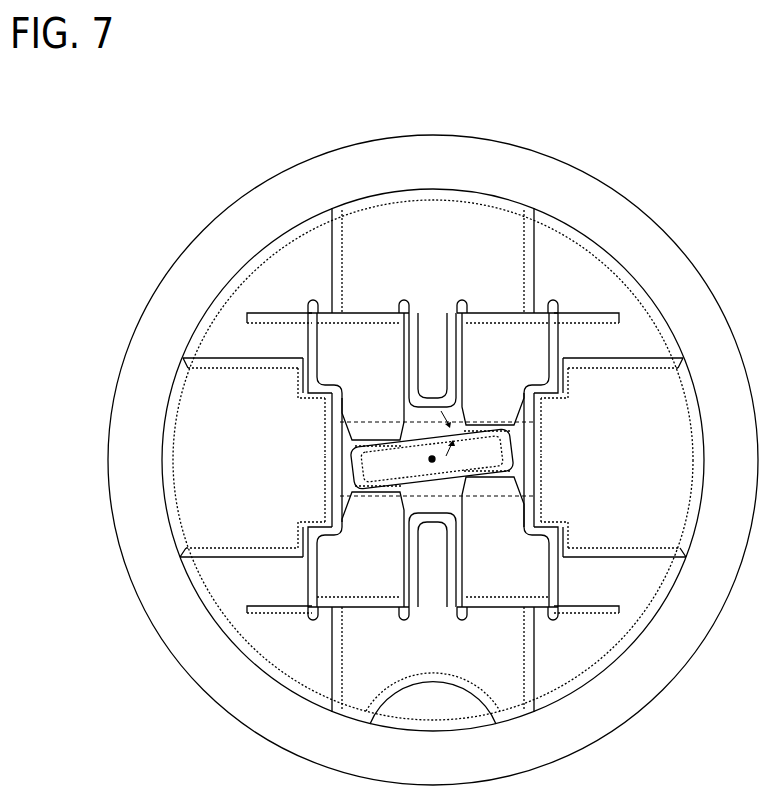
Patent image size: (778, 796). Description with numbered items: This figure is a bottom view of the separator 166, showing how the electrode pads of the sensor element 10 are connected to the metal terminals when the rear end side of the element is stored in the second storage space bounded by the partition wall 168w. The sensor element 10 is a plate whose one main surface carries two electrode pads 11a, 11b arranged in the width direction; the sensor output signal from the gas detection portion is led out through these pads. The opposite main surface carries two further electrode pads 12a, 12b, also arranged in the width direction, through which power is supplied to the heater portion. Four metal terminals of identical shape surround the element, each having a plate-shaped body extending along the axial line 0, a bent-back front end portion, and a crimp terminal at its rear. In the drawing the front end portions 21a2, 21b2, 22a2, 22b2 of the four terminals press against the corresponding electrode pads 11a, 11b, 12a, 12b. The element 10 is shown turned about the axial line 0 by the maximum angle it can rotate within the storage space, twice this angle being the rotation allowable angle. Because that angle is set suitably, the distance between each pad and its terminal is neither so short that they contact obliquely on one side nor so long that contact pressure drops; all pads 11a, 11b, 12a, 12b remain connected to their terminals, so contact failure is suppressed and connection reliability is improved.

The separator 166 is at (433, 445).
The partition wall 168w is at (392, 484).
The electrode pad 11a is at (353, 373).
The electrode pad 11b is at (512, 365).
The electrode pad 12a is at (353, 553).
The electrode pad 12b is at (512, 545).
The front end portion 21a2 is at (392, 424).
The front end portion 21b2 is at (581, 424).
The front end portion 22a2 is at (378, 493).
The front end portion 22b2 is at (567, 491).
The sensor element 10 is at (394, 466).
The axial line 0 is at (365, 462).